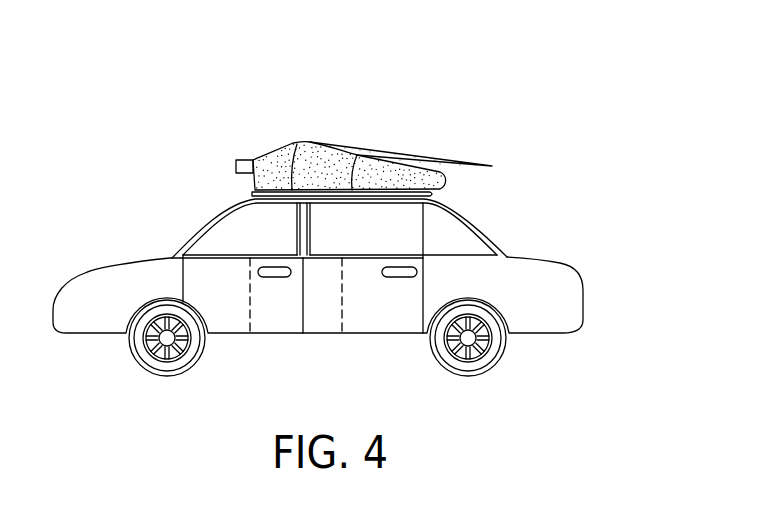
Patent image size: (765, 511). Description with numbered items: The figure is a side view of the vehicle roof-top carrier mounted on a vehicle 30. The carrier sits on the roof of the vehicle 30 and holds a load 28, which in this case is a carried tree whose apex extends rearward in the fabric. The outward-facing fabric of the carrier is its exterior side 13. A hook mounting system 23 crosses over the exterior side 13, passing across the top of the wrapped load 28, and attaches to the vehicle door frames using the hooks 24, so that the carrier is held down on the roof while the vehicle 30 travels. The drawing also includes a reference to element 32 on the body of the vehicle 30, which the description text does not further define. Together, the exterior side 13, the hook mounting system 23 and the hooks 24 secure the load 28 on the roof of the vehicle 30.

The exterior side 13 is at (270, 149).
The hook mounting system 23 is at (315, 147).
The hooks 24 is at (430, 194).
The load 28 is at (413, 155).
The vehicle 30 is at (347, 292).
The vehicle door 32 is at (282, 318).